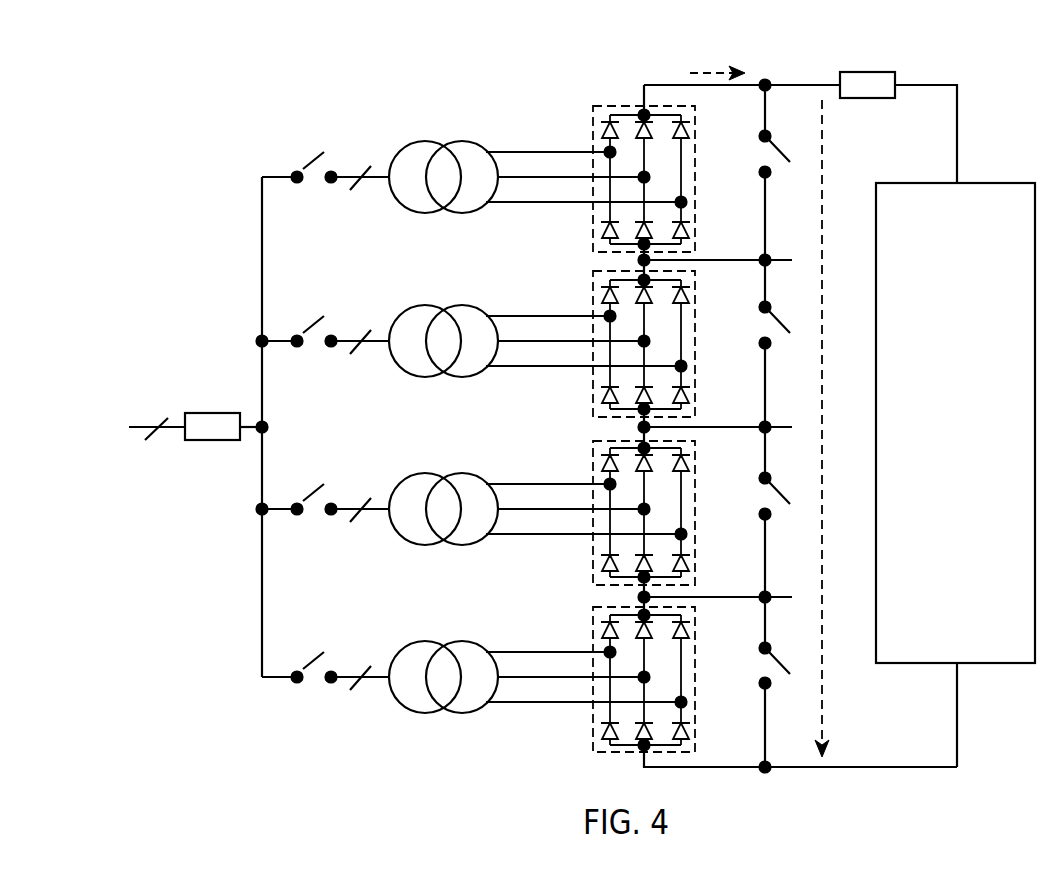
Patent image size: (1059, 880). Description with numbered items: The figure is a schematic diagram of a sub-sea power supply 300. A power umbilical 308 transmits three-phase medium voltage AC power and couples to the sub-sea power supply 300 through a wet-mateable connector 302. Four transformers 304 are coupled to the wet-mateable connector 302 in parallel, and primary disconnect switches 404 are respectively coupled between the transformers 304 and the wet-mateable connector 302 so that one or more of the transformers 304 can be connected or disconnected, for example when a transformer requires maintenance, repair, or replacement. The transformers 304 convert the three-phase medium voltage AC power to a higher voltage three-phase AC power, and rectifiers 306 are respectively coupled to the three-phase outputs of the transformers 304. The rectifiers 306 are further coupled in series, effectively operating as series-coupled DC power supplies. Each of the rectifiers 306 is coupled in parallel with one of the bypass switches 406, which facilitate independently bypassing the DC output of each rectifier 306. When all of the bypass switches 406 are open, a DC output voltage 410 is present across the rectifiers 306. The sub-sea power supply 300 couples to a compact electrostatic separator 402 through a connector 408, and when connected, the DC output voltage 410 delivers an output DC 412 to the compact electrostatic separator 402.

The sub-sea power supply 300 is at (182, 96).
The wet-mateable connector 302 is at (212, 412).
The transformers 304 is at (462, 215).
The rectifiers 306 is at (590, 234).
The power umbilical 308 is at (140, 421).
The compact electrostatic separator 402 is at (1010, 181).
The primary disconnect switches 404 is at (307, 163).
The bypass switches 406 is at (774, 150).
The connector 408 is at (868, 71).
The DC output voltage 410 is at (826, 156).
The output DC 412 is at (707, 70).